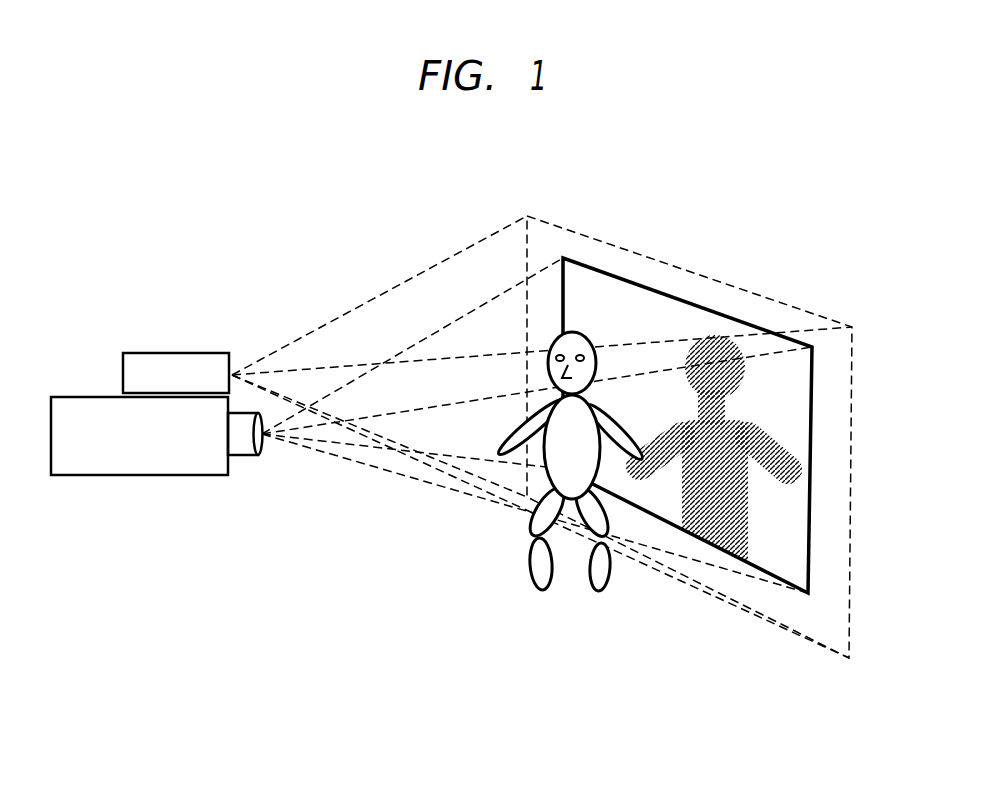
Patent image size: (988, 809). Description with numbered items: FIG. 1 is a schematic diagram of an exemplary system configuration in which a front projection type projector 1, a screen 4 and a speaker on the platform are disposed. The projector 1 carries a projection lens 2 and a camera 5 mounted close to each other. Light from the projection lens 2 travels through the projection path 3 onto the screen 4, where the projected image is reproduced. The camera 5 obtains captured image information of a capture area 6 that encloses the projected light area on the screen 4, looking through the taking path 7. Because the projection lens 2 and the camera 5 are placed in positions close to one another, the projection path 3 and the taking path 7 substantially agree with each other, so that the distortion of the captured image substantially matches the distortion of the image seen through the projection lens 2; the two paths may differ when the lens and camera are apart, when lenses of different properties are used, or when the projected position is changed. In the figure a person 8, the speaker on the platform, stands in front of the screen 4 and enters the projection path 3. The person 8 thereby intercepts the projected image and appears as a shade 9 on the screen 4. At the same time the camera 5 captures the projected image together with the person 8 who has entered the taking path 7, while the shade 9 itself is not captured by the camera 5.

The front projection type projector 1 is at (137, 476).
The projection lens 2 is at (240, 456).
The projection path 3 is at (382, 473).
The screen 4 is at (593, 292).
The camera 5 is at (177, 353).
The capture area 6 is at (722, 297).
The taking path 7 is at (350, 340).
The person 8 is at (538, 575).
The shade 9 is at (690, 500).